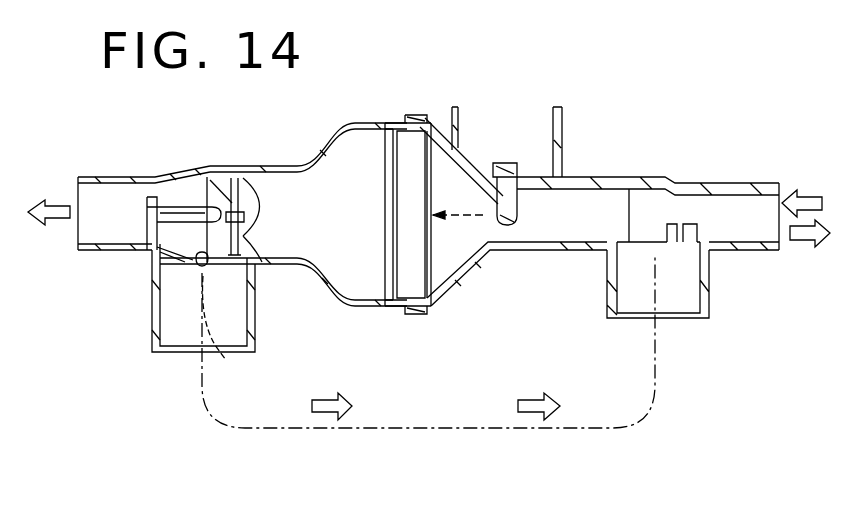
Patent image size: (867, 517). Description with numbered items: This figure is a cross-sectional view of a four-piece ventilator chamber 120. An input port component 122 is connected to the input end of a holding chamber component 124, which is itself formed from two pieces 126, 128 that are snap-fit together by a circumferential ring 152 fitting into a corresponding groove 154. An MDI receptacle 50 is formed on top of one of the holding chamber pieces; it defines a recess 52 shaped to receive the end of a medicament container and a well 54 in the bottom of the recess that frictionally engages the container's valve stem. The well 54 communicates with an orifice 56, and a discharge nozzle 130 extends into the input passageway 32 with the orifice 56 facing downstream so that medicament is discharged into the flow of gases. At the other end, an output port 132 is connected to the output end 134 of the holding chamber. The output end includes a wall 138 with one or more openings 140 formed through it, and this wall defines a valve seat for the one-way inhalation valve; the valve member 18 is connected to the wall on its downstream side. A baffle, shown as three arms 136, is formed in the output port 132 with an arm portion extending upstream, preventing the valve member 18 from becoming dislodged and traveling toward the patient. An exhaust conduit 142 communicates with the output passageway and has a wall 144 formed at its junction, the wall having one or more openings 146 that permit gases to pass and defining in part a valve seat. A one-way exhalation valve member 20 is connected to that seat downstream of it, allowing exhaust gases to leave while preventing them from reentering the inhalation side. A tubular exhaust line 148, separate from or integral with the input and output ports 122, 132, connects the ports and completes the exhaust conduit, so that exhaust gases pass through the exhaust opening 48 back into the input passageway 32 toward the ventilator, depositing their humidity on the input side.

The valve member 18 is at (220, 187).
The one-way exhalation valve member 20 is at (222, 330).
The input passageway 32 is at (722, 215).
The exhaust opening 48 is at (679, 258).
The MDI receptacle 50 is at (563, 145).
The recess 52 is at (497, 137).
The well 54 is at (508, 163).
The orifice 56 is at (495, 205).
The four-piece ventilator chamber 120 is at (400, 90).
The input port component 122 is at (650, 177).
The holding chamber component 124 is at (433, 119).
The holding chamber piece 126 is at (470, 276).
The holding chamber piece 128 is at (317, 150).
The discharge nozzle 130 is at (508, 212).
The output port 132 is at (155, 177).
The output end 134 is at (235, 265).
The arms 136 is at (145, 225).
The wall 138 is at (266, 176).
The openings 140 is at (231, 185).
The exhaust conduit 142 is at (152, 323).
The wall 144 is at (150, 262).
The openings 146 is at (223, 255).
The tubular exhaust line 148 is at (270, 428).
The circumferential ring 152 is at (412, 133).
The groove 154 is at (416, 310).